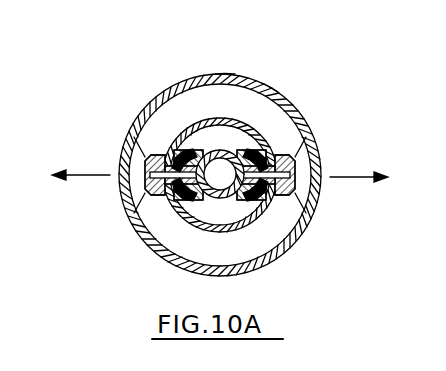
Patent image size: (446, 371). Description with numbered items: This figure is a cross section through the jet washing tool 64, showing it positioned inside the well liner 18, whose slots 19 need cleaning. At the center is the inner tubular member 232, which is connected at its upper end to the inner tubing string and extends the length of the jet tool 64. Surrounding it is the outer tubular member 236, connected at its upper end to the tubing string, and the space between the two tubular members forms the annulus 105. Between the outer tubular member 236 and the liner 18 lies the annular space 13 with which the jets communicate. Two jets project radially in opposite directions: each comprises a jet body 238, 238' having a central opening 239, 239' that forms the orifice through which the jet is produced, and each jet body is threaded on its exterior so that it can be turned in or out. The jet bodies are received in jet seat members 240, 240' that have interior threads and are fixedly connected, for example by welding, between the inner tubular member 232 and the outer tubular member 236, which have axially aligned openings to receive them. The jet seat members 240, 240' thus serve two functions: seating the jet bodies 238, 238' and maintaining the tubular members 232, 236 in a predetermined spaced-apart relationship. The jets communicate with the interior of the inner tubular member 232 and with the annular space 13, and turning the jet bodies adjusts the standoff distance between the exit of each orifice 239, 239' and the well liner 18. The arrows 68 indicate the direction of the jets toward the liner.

The well liner 18 is at (292, 105).
The slots 19 is at (270, 93).
The annular space 13 is at (183, 243).
The jet washing tool 64 is at (268, 223).
The force arrows 68 is at (133, 156).
The annulus 105 is at (219, 207).
The inner tubular member 232 is at (212, 150).
The outer tubular member 236 is at (247, 220).
The jet body 238 is at (116, 215).
The jet body 238' is at (335, 201).
The central opening 239 is at (110, 189).
The central opening 239' is at (336, 189).
The jet seat member 240 is at (136, 151).
The jet seat member 240' is at (307, 153).